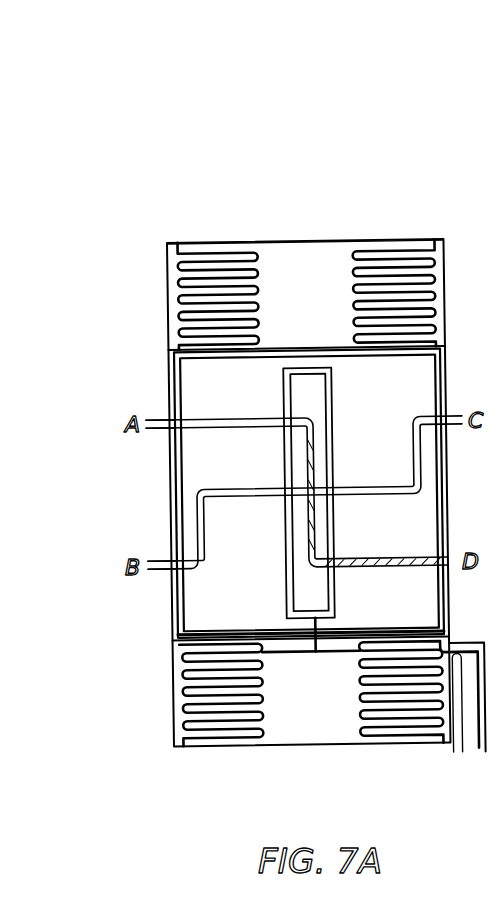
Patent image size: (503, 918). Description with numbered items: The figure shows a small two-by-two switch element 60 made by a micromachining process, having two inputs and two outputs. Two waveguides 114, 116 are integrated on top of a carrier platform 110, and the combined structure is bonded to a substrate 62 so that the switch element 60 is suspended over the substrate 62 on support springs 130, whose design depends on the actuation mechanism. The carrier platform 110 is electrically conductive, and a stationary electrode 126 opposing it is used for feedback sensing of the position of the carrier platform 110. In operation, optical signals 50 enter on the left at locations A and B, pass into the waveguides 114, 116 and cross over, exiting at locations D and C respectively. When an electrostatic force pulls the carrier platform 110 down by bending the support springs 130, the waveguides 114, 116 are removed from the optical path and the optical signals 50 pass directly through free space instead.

The switch element 60 is at (139, 204).
The support springs 130 is at (387, 250).
The substrate 62 is at (305, 272).
The carrier platform 110 is at (411, 396).
The electrode 126 is at (287, 386).
The waveguide 114 is at (403, 497).
The waveguide 116 is at (407, 568).
The optical signals 50 is at (106, 423).